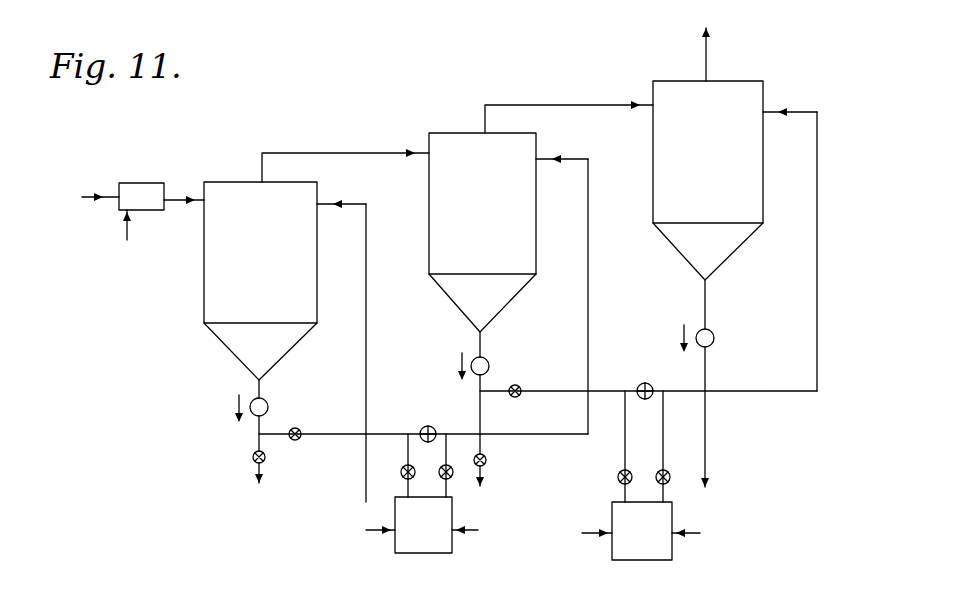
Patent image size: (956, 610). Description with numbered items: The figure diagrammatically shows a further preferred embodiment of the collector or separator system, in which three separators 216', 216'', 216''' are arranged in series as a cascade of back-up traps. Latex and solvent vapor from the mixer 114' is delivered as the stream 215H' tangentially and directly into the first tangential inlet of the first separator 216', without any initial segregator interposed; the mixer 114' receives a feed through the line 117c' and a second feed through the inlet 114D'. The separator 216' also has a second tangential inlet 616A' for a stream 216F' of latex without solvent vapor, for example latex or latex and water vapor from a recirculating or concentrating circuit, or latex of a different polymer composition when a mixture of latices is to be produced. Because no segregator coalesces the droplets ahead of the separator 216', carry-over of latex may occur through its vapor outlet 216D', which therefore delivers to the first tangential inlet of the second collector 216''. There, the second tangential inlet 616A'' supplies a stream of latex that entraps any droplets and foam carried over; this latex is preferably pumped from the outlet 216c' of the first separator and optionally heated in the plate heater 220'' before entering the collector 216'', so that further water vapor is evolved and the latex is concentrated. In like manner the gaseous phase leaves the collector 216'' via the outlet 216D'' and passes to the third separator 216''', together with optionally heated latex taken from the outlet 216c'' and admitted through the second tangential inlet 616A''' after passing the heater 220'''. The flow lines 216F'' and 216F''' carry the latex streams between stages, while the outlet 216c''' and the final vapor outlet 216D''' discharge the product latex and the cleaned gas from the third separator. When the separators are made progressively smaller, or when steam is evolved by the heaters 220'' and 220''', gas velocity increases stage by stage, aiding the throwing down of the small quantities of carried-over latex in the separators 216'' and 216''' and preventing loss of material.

The mixer 114' is at (146, 167).
The feed line 117c' is at (88, 174).
The feed inlet 114D' is at (94, 247).
The latex and solvent vapor stream 215H' is at (170, 230).
The separator 216' is at (227, 281).
The outlet 216c' is at (213, 430).
The stream of latex without solvent vapor 216F' is at (423, 358).
The second tangential inlet 616A' is at (356, 199).
The vapor outlet 216D' is at (345, 148).
The plate heater 220'' is at (386, 507).
The second collector 216'' is at (458, 232).
The outlet 216c'' is at (434, 409).
The second stage flow line 216F'' is at (648, 438).
The second tangential inlet 616A'' is at (577, 278).
The vapor outlet 216D'' is at (564, 97).
The heater 220''' is at (612, 489).
The third separator 216''' is at (689, 188).
The third tank discharge pump line 216c''' is at (659, 383).
The third stage flow line 216F''' is at (758, 425).
The second tangential inlet 616A''' is at (798, 216).
The third overflow line 216D''' is at (655, 54).